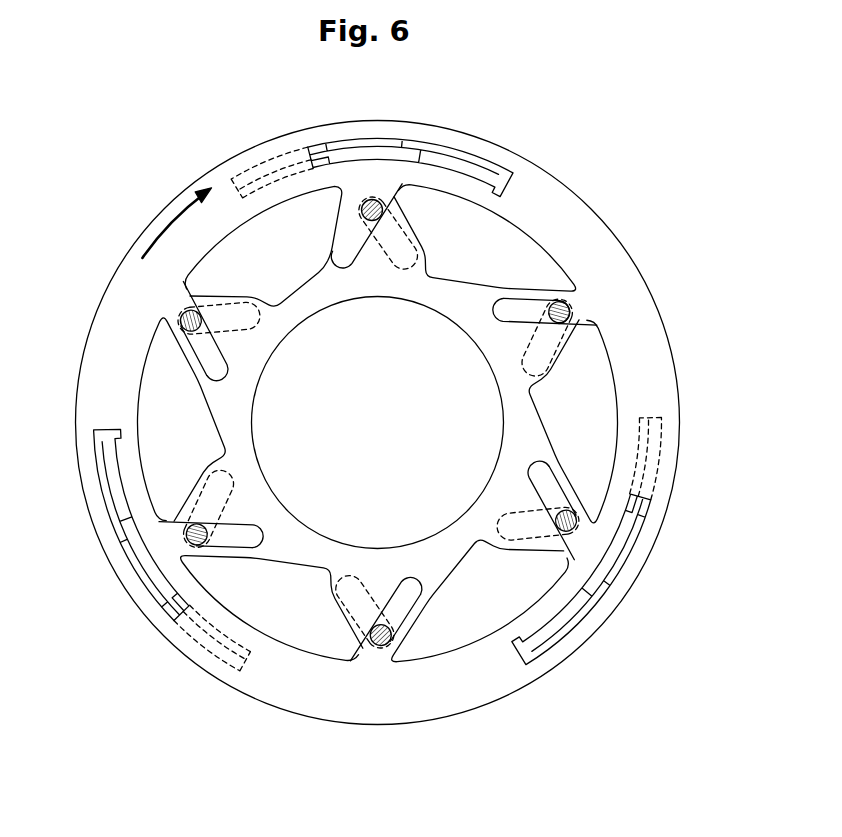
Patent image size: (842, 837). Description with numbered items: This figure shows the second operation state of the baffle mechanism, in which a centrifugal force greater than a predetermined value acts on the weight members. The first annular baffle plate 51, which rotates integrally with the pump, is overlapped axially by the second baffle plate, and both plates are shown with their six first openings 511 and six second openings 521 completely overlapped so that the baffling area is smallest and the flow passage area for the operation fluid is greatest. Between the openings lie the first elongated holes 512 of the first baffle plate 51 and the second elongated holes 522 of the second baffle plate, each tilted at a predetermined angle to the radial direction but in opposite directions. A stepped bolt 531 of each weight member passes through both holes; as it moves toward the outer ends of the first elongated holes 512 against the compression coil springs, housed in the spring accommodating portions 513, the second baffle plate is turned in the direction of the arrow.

The first annular baffle plate 51 is at (457, 129).
The first openings 511 is at (223, 250).
The second openings 521 is at (391, 418).
The first elongated holes 512 is at (525, 306).
The second elongated holes 522 is at (324, 262).
The stepped bolt 531 is at (372, 196).
The spring accommodating portion 513 is at (165, 566).